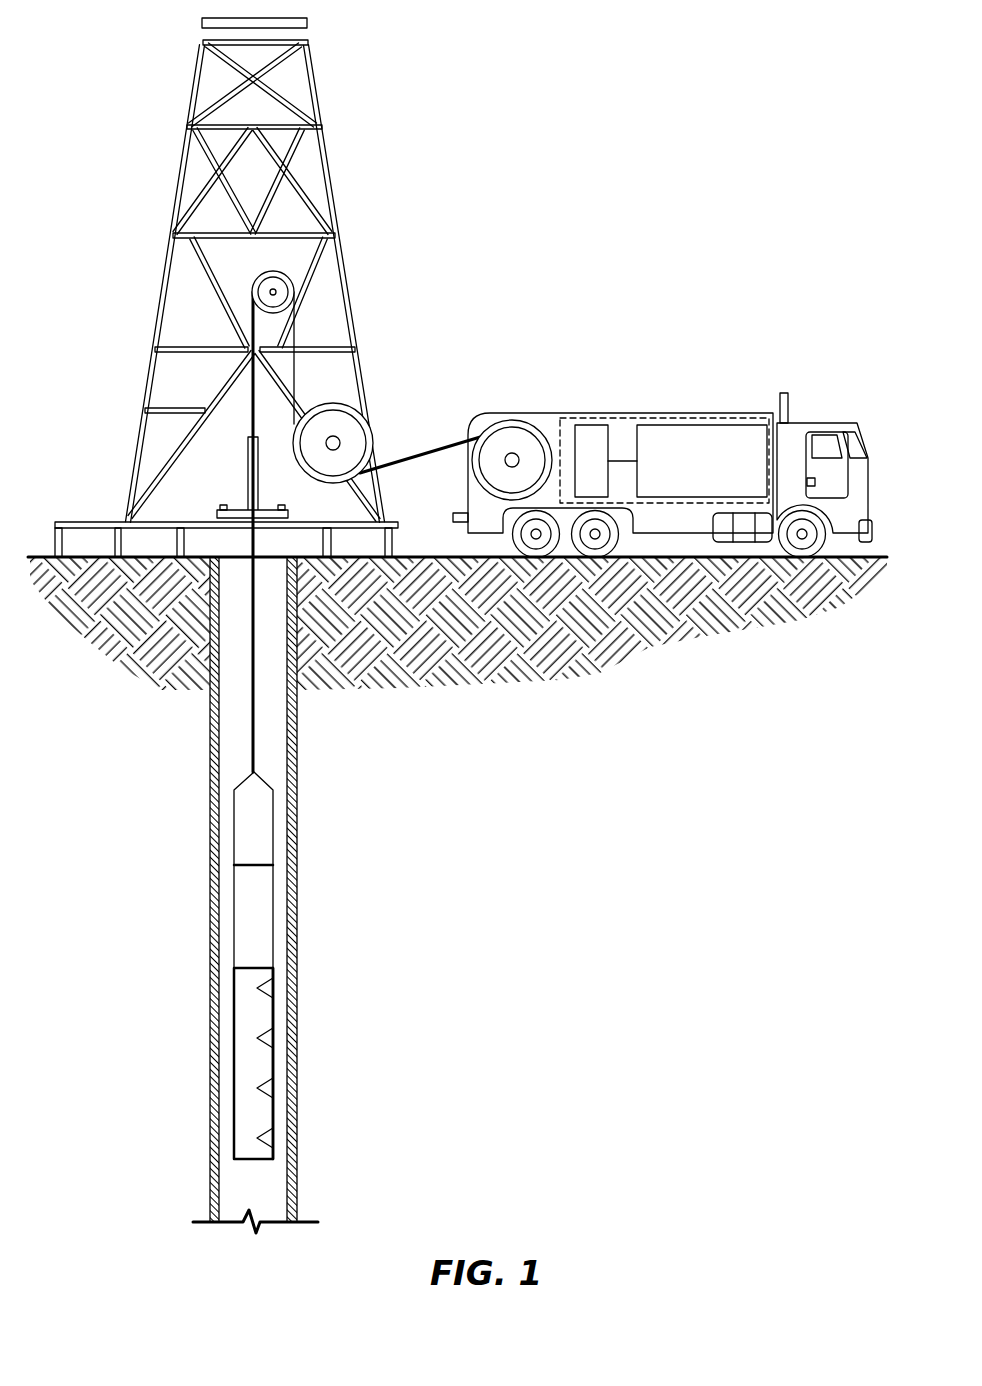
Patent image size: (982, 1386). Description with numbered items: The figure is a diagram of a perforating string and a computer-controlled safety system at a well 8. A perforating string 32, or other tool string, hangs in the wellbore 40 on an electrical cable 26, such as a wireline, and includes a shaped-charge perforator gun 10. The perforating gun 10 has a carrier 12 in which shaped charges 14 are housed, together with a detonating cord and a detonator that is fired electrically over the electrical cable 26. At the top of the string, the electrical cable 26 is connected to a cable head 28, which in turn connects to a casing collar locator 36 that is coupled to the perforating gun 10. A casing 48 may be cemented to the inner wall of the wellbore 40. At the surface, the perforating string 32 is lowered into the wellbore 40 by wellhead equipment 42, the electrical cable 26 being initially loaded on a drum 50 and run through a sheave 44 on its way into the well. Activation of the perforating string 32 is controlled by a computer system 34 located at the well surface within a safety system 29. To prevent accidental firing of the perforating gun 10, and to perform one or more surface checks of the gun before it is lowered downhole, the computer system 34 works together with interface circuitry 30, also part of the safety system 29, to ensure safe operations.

The well 8 is at (290, 722).
The shaped-charge perforator gun 10 is at (253, 1063).
The carrier 12 is at (268, 1013).
The shaped charges 14 is at (305, 1063).
The electrical cable 26 is at (255, 730).
The cable head 28 is at (253, 818).
The safety system 29 is at (628, 420).
The interface circuitry 30 is at (606, 461).
The perforating string 32 is at (246, 965).
The computer system 34 is at (702, 461).
The casing collar locator 36 is at (253, 916).
The wellbore 40 is at (255, 1203).
The wellhead equipment 42 is at (350, 138).
The sheave 44 is at (263, 276).
The casing 48 is at (212, 740).
The drum 50 is at (508, 420).